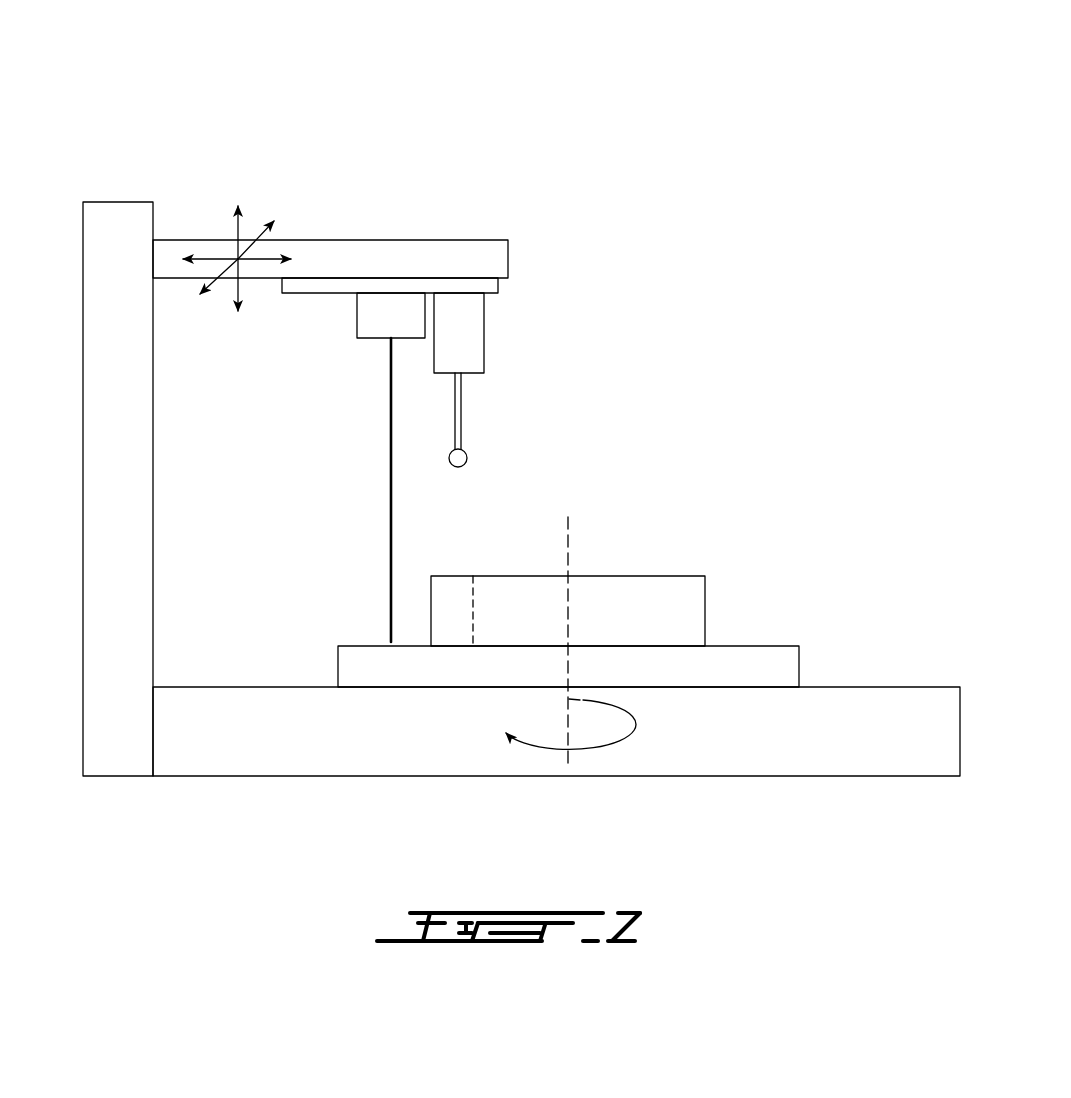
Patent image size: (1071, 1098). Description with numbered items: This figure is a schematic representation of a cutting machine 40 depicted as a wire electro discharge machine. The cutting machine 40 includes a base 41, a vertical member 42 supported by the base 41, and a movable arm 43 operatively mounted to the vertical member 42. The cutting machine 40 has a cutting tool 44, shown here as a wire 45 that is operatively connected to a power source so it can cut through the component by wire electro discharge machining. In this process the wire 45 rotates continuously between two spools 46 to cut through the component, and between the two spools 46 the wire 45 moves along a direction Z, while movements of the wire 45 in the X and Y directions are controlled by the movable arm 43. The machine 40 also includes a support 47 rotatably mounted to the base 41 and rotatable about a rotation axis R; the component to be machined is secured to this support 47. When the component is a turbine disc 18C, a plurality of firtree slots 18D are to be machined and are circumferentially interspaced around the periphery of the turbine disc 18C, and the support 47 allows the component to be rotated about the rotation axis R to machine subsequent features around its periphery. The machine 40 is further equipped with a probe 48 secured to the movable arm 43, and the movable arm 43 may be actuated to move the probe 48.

The cutting machine 40 is at (732, 153).
The base 41 is at (873, 718).
The vertical member 42 is at (105, 467).
The movable arm 43 is at (488, 257).
The cutting tool 44 is at (409, 467).
The wire 45 is at (392, 517).
The spools 46 is at (356, 317).
The support 47 is at (745, 660).
The probe 48 is at (472, 343).
The turbine disc 18C is at (682, 588).
The firtree slots 18D is at (473, 605).
The rotation axis R is at (568, 530).
The X direction X is at (267, 252).
The Y direction Y is at (222, 282).
The Z direction Z is at (233, 238).